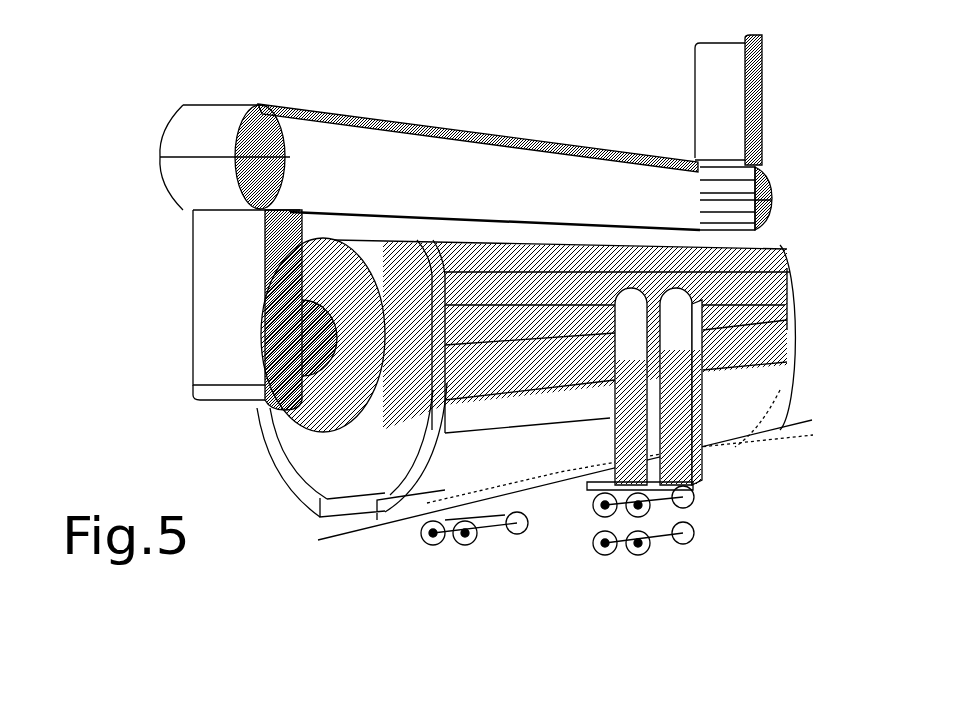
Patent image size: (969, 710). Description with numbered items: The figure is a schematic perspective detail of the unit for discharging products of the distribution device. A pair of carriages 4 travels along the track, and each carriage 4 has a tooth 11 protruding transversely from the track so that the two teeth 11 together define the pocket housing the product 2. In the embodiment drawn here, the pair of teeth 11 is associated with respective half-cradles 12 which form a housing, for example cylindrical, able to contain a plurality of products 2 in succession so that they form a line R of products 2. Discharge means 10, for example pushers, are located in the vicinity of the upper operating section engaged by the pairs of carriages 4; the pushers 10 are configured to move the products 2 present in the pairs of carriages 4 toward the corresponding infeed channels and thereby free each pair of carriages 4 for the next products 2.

The line of products R is at (377, 217).
The product 2 is at (410, 250).
The discharge means 10 is at (223, 295).
The half-cradle 12 is at (740, 395).
The tooth 11 is at (648, 442).
The carriage 4 is at (703, 517).